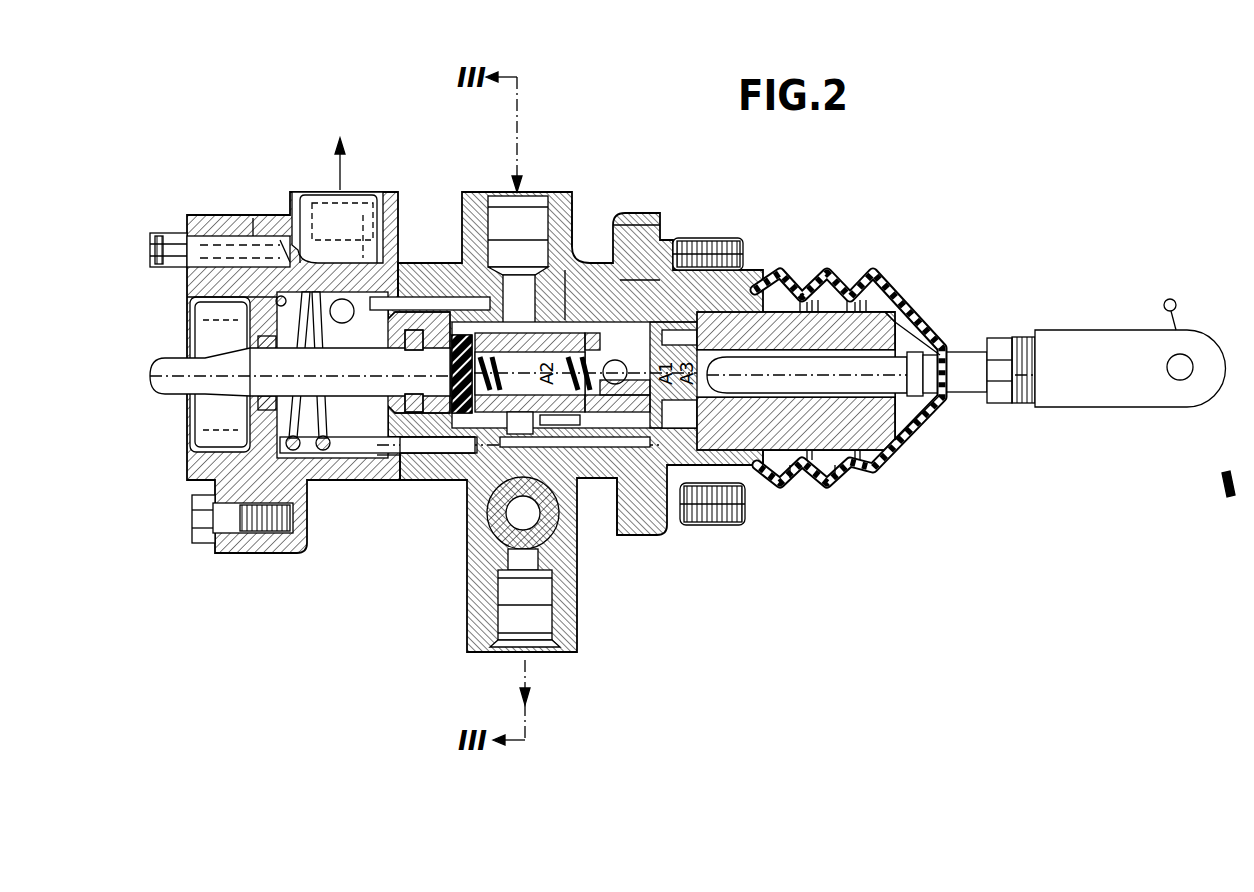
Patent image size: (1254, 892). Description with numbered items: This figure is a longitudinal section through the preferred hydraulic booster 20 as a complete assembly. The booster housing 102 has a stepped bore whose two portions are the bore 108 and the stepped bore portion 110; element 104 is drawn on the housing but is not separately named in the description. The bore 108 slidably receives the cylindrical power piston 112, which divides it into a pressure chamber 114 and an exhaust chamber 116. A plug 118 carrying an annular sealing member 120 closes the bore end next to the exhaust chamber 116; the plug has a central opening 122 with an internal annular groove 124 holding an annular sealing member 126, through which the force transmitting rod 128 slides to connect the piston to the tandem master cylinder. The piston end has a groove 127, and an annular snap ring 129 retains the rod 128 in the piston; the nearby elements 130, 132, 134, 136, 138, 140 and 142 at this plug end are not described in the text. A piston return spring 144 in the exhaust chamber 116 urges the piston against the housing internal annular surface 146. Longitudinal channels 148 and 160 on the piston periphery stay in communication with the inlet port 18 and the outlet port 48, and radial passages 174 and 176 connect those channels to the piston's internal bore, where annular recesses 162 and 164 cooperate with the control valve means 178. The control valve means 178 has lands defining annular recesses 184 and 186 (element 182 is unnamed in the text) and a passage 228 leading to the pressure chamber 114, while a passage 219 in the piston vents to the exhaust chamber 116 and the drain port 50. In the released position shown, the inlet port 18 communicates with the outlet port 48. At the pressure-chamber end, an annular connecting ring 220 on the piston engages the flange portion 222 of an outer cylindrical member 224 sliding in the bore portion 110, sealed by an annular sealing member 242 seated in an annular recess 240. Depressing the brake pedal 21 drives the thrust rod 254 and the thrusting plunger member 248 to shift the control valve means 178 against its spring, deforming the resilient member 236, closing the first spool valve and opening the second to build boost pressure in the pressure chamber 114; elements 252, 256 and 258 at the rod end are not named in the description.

The inlet port 18 is at (528, 192).
The valve assembly 20 is at (678, 213).
The brake pedal 21 is at (1190, 407).
The outlet port 48 is at (500, 655).
The drain port 50 is at (362, 192).
The booster housing 102 is at (360, 480).
The valve body 104 is at (420, 262).
The bore 108 is at (410, 470).
The stepped bore portion 110 is at (815, 466).
The power piston 112 is at (435, 470).
The pressure chamber 114 is at (580, 263).
The exhaust chamber 116 is at (395, 480).
The plug 118 is at (187, 470).
The annular sealing member 120 is at (200, 290).
The central opening 122 is at (258, 343).
The internal annular groove 124 is at (300, 410).
The annular sealing member 126 is at (250, 400).
The groove 127 is at (405, 345).
The force transmitting rod 128 is at (168, 370).
The annular snap ring 129 is at (400, 445).
The flange 130 is at (202, 215).
The bolt hole 132 is at (255, 245).
The bolt 134 is at (165, 233).
The bolt 136 is at (285, 240).
The flange 138 is at (272, 215).
The bolt head 140 is at (195, 520).
The bolt 142 is at (240, 535).
The piston return spring 144 is at (300, 518).
The housing internal annular surface 146 is at (725, 512).
The longitudinal channel 148 is at (608, 293).
The longitudinal channel 160 is at (660, 505).
The annular recess 162 is at (522, 310).
The annular recess 164 is at (640, 300).
The radial passage 174 is at (575, 330).
The radial passage 176 is at (570, 508).
The control valve means 178 is at (480, 420).
The valve element 182 is at (625, 368).
The annular recess 184 is at (540, 428).
The annular recess 186 is at (600, 428).
The passage 219 is at (470, 320).
The annular connecting ring 220 is at (700, 265).
The flange portion 222 is at (720, 340).
The outer cylindrical member 224 is at (868, 280).
The passage 228 is at (706, 440).
The resilient member 236 is at (420, 306).
The annular recess 240 is at (730, 295).
The annular sealing member 242 is at (725, 437).
The thrusting plunger member 248 is at (860, 468).
The push rod 252 is at (762, 360).
The thrust rod 254 is at (920, 320).
The boot flange 256 is at (770, 485).
The boot cone 258 is at (918, 428).